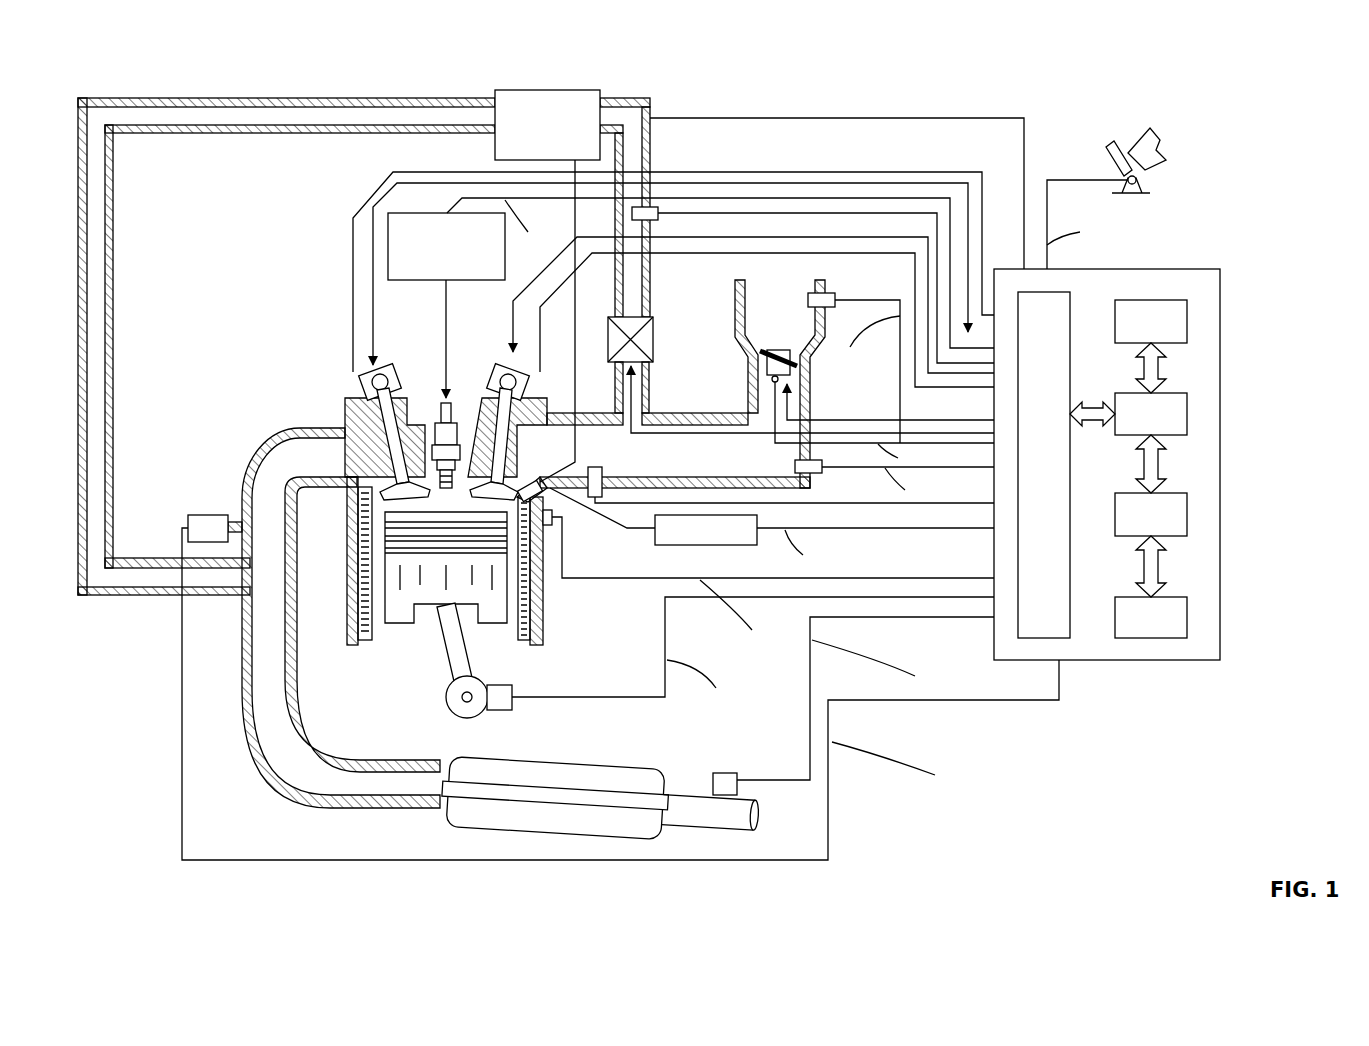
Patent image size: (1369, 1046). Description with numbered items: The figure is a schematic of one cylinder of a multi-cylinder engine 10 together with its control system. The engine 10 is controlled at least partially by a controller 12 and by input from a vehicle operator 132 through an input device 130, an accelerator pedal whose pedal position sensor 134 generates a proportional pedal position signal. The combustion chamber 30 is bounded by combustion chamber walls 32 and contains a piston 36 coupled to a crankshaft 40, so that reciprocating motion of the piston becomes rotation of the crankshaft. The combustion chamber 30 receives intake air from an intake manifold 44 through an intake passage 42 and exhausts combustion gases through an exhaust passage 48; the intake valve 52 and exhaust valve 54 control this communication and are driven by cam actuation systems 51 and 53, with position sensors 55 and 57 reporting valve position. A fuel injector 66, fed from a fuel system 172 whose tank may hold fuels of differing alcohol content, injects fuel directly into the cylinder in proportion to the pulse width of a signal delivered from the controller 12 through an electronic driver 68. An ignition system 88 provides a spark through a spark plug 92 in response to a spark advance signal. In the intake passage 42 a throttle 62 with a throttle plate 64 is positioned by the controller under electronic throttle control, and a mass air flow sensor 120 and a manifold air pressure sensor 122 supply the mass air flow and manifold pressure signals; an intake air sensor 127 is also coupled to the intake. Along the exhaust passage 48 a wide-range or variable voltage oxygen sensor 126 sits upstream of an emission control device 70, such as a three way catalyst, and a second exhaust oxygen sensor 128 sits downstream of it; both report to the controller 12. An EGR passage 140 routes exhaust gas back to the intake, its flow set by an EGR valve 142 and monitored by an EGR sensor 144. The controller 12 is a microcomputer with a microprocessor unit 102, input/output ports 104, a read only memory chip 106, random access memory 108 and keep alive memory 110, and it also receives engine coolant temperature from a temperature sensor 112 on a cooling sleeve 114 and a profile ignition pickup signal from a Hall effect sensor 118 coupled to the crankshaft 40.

The engine 10 is at (613, 529).
The controller 12 is at (1149, 451).
The combustion chamber 30 is at (355, 607).
The combustion chamber walls 32 is at (365, 645).
The piston 36 is at (430, 600).
The crankshaft 40 is at (455, 712).
The intake passage 42 is at (780, 384).
The intake manifold 44 is at (663, 457).
The exhaust passage 48 is at (341, 618).
The cam actuation system 51 is at (503, 370).
The intake valve 52 is at (505, 470).
The cam actuation system 53 is at (390, 372).
The exhaust valve 54 is at (376, 418).
The position sensor 55 is at (518, 385).
The position sensor 57 is at (372, 383).
The throttle 62 is at (797, 363).
The throttle plate 64 is at (758, 352).
The fuel injector 66 is at (560, 500).
The electronic driver 68 is at (665, 545).
The emission control device 70 is at (612, 766).
The ignition system 88 is at (400, 213).
The spark plug 92 is at (450, 420).
The microprocessor unit 102 is at (1187, 414).
The input/output ports 104 is at (1090, 298).
The read only memory chip 106 is at (1187, 320).
The random access memory 108 is at (1187, 515).
The keep alive memory 110 is at (1187, 618).
The temperature sensor 112 is at (555, 526).
The cooling sleeve 114 is at (545, 605).
The Hall effect sensor 118 is at (498, 712).
The mass air flow sensor 120 is at (835, 296).
The manifold air pressure sensor 122 is at (820, 474).
The oxygen sensor 126 is at (188, 520).
The intake air sensor 127 is at (596, 470).
The second exhaust oxygen sensor 128 is at (736, 775).
The input device 130 is at (1164, 195).
The vehicle operator 132 is at (1160, 143).
The pedal position sensor 134 is at (1150, 180).
The EGR passage 140 is at (355, 98).
The EGR valve 142 is at (653, 342).
The EGR sensor 144 is at (650, 220).
The fuel system 172 is at (553, 92).